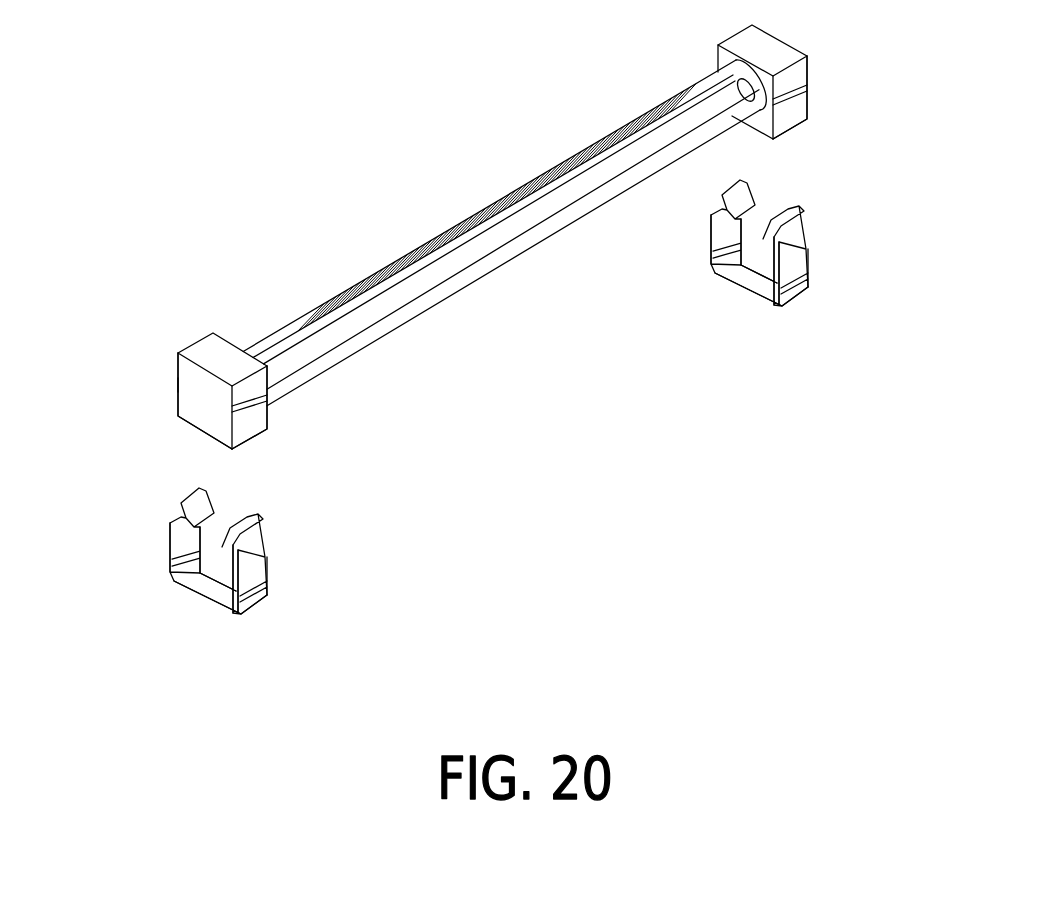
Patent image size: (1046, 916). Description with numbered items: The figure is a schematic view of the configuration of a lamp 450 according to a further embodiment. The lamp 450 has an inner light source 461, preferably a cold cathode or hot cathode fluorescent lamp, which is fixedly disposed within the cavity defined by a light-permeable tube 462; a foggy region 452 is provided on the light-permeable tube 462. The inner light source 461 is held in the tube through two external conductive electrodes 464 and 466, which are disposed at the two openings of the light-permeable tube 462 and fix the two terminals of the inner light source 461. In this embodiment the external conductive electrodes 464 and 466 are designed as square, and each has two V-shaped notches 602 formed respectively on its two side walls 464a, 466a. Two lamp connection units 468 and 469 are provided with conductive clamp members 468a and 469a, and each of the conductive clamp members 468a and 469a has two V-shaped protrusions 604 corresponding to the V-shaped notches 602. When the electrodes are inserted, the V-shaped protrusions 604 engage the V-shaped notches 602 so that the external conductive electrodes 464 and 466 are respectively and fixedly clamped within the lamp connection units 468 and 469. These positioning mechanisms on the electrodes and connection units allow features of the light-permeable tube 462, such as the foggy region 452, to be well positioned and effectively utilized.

The lamp 450 is at (259, 321).
The foggy region 452 is at (456, 226).
The inner light source 461 is at (712, 108).
The light-permeable tube 462 is at (438, 290).
The external conductive electrode 464 is at (202, 418).
The side wall 464a is at (180, 396).
The external conductive electrode 466 is at (787, 118).
The side wall 466a is at (793, 110).
The V-shaped notch 602 is at (254, 407).
The V-shaped protrusion 604 is at (233, 590).
The lamp connection unit 468 is at (160, 533).
The conductive clamp member 468a is at (190, 560).
The lamp connection unit 469 is at (699, 223).
The conductive clamp member 469a is at (735, 266).